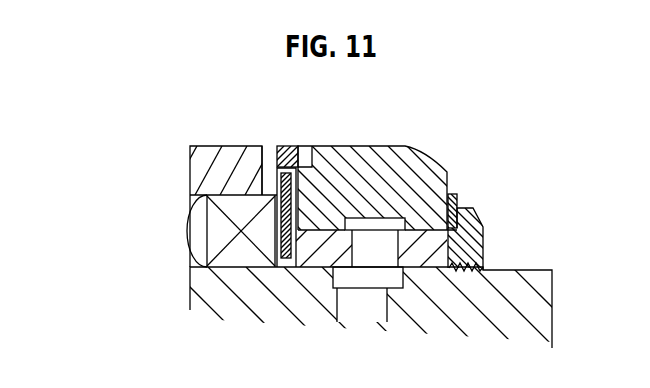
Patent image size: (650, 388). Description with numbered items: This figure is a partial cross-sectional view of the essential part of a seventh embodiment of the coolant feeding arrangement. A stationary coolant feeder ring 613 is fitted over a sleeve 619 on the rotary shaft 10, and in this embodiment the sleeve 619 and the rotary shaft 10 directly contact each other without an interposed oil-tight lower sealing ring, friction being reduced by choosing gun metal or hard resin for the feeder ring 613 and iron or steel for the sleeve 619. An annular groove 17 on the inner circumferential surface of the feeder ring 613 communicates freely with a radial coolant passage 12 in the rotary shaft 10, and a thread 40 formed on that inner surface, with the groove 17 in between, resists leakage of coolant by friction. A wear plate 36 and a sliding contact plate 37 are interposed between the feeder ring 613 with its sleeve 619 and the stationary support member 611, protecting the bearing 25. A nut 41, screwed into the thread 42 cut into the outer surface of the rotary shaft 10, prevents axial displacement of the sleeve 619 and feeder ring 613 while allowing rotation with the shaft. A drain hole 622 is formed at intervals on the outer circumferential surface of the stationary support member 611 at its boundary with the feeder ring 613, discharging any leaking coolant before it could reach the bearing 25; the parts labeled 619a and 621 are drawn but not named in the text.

The rotary shaft 10 is at (520, 302).
The radial coolant passage 12 is at (365, 306).
The annular groove 17 is at (363, 223).
The bearing 25 is at (206, 230).
The wear plate 36 is at (270, 166).
The sliding contact plate 37 is at (303, 170).
The thread 40 is at (457, 200).
The nut 41 is at (482, 222).
The thread 42 is at (486, 266).
The stationary support member 611 is at (203, 156).
The stationary coolant feeder ring 613 is at (422, 157).
The sleeve 619 is at (444, 271).
The nut 619a is at (386, 290).
The clip plate 621 is at (293, 265).
The drain hole 622 is at (286, 162).